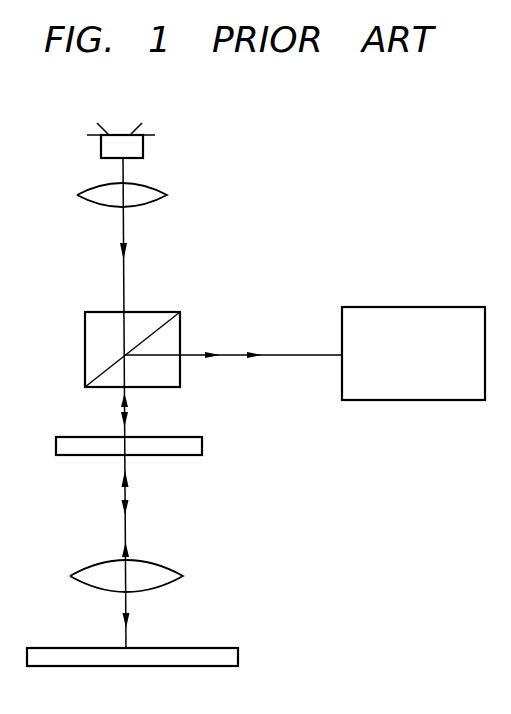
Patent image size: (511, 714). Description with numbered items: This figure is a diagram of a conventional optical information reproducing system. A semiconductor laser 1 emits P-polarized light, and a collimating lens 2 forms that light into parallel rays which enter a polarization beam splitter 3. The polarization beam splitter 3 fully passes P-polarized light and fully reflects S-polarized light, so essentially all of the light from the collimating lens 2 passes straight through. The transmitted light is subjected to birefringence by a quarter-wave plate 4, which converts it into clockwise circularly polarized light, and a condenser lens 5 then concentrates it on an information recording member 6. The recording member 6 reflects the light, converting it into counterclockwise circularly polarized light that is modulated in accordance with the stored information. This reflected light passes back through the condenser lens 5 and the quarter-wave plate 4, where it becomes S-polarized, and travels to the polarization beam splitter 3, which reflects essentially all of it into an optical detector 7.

The semiconductor laser 1 is at (100, 150).
The collimating lens 2 is at (78, 195).
The polarization beam splitter 3 is at (85, 328).
The quarter-wave plate 4 is at (72, 437).
The condenser lens 5 is at (72, 574).
The information recording member 6 is at (67, 648).
The optical detector 7 is at (400, 307).